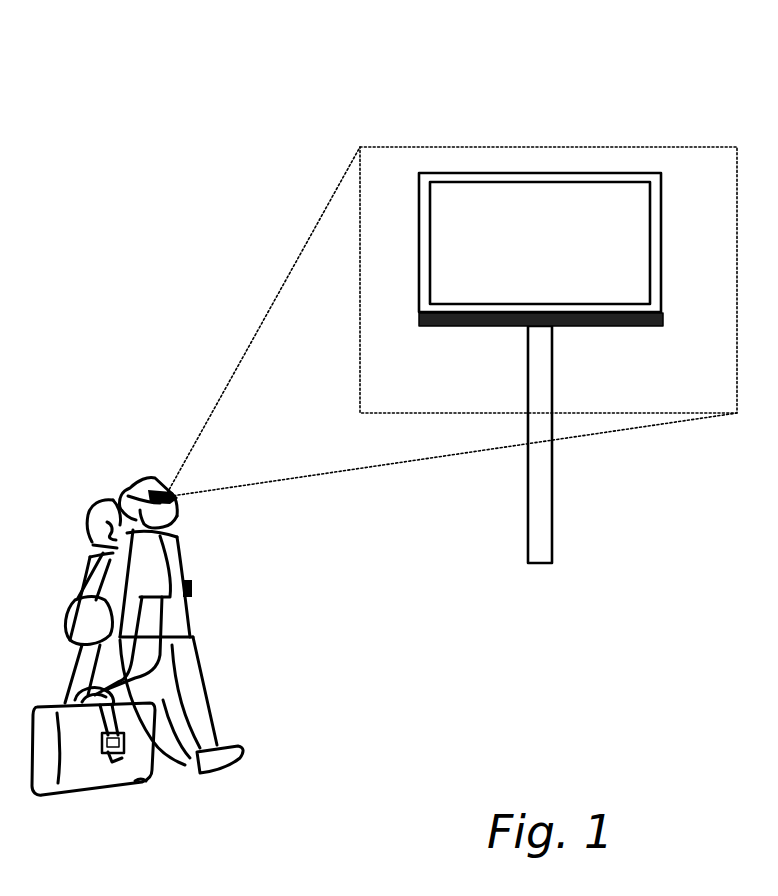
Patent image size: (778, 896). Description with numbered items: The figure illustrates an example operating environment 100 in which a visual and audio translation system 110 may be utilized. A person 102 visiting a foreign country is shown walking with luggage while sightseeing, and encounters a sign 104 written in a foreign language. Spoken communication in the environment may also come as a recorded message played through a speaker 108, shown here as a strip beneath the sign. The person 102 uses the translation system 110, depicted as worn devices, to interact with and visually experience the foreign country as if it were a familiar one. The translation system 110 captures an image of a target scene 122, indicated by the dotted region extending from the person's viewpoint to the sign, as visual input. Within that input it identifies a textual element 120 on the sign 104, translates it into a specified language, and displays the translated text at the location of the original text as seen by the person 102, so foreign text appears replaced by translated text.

The operating environment 100 is at (347, 82).
The person 102 is at (134, 473).
The sign 104 is at (661, 266).
The speaker 108 is at (612, 326).
The visual and audio translation system 110 is at (199, 505).
The textual element 120 is at (556, 244).
The target scene 122 is at (527, 147).